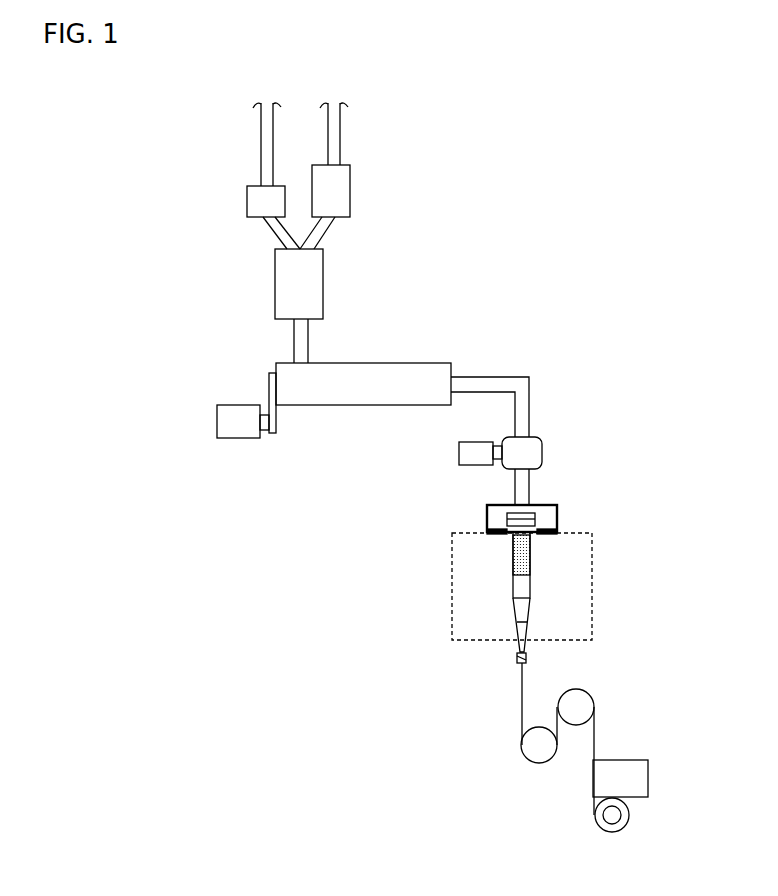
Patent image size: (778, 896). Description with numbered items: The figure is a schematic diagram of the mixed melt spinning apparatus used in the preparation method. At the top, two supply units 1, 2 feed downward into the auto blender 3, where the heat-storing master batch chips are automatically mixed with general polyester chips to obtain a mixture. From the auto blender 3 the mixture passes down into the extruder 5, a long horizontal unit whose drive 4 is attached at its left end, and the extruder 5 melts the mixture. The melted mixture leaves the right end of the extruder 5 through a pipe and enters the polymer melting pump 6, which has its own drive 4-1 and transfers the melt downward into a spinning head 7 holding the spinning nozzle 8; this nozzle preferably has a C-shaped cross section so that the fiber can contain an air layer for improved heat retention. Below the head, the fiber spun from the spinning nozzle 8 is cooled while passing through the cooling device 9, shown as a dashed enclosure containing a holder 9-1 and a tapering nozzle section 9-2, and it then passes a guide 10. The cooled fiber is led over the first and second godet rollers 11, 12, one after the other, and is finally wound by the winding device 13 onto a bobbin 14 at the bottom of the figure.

The first supply unit 1 is at (342, 192).
The second supply unit 2 is at (255, 202).
The auto blender 3 is at (313, 283).
The drive motor 4 is at (227, 423).
The gear pump drive 4-1 is at (465, 452).
The extruder 5 is at (395, 375).
The polymer melting pump 6 is at (528, 447).
The spinning head 7 is at (548, 512).
The spinning nozzle 8 is at (508, 517).
The cooling device 9 is at (452, 552).
The spinneret holder 9-1 is at (543, 533).
The spinneret nozzle 9-2 is at (531, 567).
The quench/guide 10 is at (527, 662).
The first godet roller 11 is at (522, 750).
The second godet roller 12 is at (585, 704).
The winding device 13 is at (648, 780).
The winding bobbin 14 is at (624, 819).